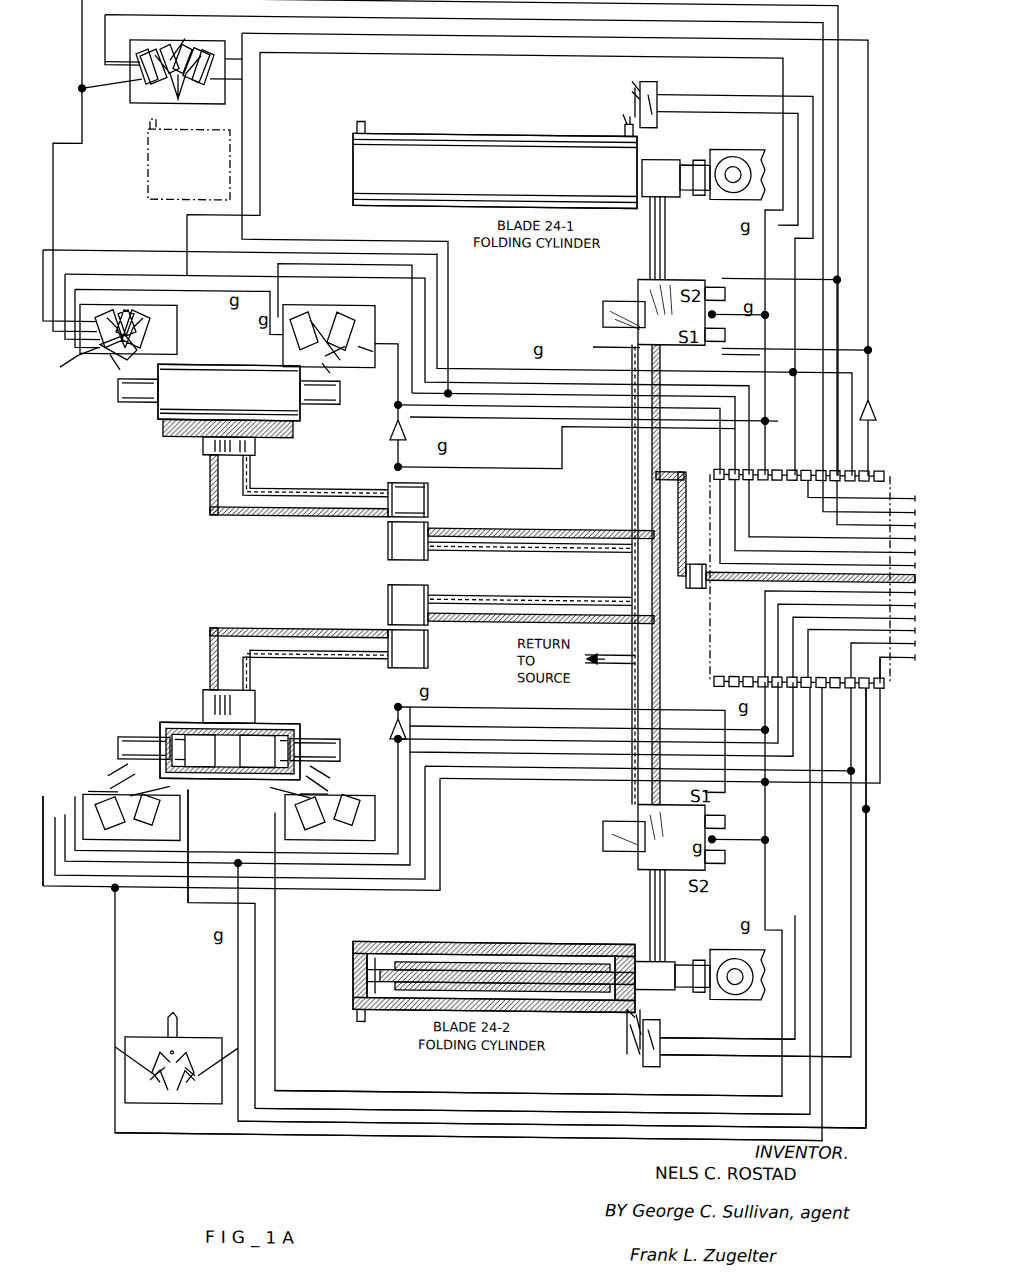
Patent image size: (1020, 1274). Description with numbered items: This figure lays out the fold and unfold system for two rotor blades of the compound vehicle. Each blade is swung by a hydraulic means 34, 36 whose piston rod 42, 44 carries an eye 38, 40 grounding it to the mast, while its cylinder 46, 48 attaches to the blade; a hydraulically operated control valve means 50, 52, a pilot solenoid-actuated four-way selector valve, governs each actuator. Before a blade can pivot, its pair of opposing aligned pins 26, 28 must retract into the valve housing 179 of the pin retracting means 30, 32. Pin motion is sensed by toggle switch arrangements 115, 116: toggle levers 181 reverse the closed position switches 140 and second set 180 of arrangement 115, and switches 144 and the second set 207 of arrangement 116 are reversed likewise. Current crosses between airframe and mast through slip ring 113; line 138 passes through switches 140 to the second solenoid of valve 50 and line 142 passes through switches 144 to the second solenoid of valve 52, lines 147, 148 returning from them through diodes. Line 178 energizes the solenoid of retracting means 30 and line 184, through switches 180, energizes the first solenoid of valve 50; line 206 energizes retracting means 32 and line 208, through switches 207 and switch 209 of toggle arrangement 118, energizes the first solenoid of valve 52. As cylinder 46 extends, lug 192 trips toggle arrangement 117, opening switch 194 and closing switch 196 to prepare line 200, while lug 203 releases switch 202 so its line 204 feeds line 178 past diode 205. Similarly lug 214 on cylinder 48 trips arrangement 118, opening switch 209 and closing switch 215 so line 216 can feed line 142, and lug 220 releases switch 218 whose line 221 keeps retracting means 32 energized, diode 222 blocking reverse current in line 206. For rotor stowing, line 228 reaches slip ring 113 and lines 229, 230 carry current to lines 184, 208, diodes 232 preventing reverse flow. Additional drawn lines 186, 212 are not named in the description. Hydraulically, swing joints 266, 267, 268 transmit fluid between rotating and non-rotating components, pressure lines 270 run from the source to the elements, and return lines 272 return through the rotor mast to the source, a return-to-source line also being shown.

The pin 26 is at (135, 742).
The pin 28 is at (325, 740).
The pin retracting means 30 is at (157, 455).
The pin retracting means 32 is at (178, 686).
The hydraulic means 34 is at (468, 130).
The hydraulic means 36 is at (580, 898).
The eye 38 is at (745, 155).
The eye 40 is at (735, 960).
The piston rod 42 is at (702, 158).
The piston rod 44 is at (697, 958).
The cylinder 46 is at (540, 140).
The cylinder 48 is at (523, 940).
The blade fold and unfold control valve means 50 is at (620, 282).
The blade fold and unfold control valve means 52 is at (620, 860).
The slip ring 113 is at (697, 655).
The toggle switch arrangement 115 is at (310, 282).
The toggle switch arrangement 116 is at (333, 878).
The toggle switch arrangement 117 is at (190, 58).
The toggle switch arrangement 118 is at (160, 1042).
The line 138 is at (800, 453).
The closed position switches 140 is at (335, 323).
The line 142 is at (742, 864).
The closed position switches 144 is at (229, 816).
The line 147 is at (837, 287).
The line 148 is at (876, 757).
The line 178 is at (712, 423).
The valve housing 179 is at (238, 783).
The switches 180 is at (350, 352).
The toggle levers 181 is at (315, 381).
The line 184 is at (725, 345).
The conductor 186 is at (487, 393).
The lug 192 is at (363, 130).
The toggle switch 194 is at (215, 99).
The toggle switch 196 is at (140, 92).
The line 200 is at (790, 65).
The toggle arrangement switch 202 is at (648, 92).
The lug 203 is at (628, 125).
The line 204 is at (580, 446).
The diode 205 is at (539, 435).
The line 206 is at (465, 705).
The switches 207 is at (308, 780).
The line 208 is at (305, 1133).
The toggle switch 209 is at (192, 1100).
The conductor 212 is at (440, 851).
The lug 214 is at (358, 1021).
The toggle switch 215 is at (153, 1100).
The line 216 is at (440, 1162).
The toggle arrangement switch 218 is at (662, 1031).
The lug 220 is at (625, 1043).
The line 221 is at (700, 1047).
The diode 222 is at (553, 710).
The line 228 is at (887, 654).
The line 229 is at (867, 393).
The line 230 is at (875, 734).
The diodes 232 is at (870, 421).
The swing joint 266 is at (383, 540).
The swing joint 267 is at (377, 625).
The swing joint 268 is at (688, 592).
The lines 270 is at (743, 580).
The return lines 272 is at (265, 606).